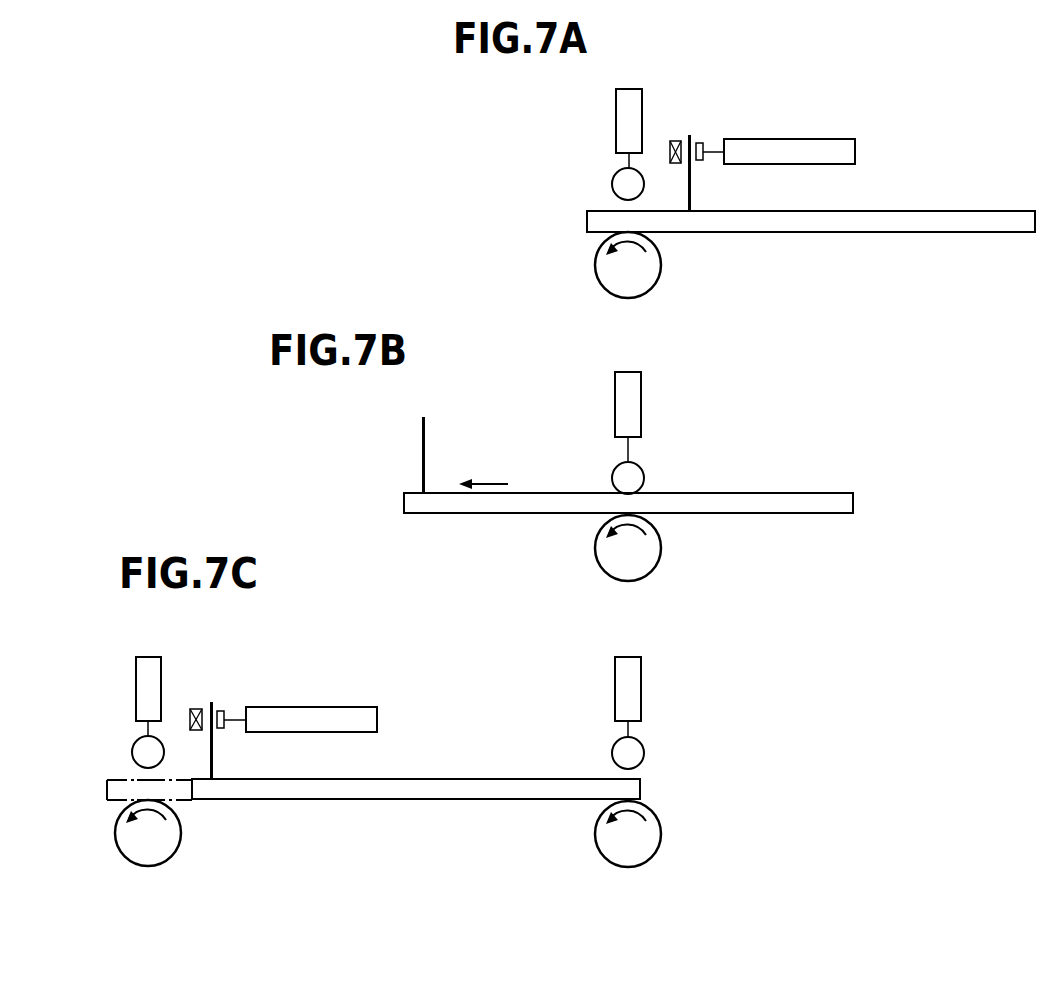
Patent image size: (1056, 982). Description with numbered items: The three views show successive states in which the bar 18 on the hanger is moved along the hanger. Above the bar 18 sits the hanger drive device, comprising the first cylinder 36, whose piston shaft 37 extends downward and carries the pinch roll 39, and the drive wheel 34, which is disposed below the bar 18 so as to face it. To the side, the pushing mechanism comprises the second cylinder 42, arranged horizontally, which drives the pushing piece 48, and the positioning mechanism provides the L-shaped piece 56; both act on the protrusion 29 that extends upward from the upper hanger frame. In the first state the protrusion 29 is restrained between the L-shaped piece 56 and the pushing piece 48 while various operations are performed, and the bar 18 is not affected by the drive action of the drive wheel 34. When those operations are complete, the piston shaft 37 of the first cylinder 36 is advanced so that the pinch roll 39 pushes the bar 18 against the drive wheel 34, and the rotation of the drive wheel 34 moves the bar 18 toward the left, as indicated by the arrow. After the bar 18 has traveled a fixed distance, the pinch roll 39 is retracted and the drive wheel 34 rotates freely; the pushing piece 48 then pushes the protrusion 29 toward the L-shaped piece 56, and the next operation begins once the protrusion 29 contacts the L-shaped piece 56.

In FIG. 7A, the bar 18 is at (857, 223).
In FIG. 7B, the bar 18 is at (778, 505).
In FIG. 7C, the bar 18 is at (370, 793).
In FIG. 7A, the protrusion 29 is at (692, 135).
In FIG. 7B, the protrusion 29 is at (427, 430).
In FIG. 7C, the protrusion 29 is at (213, 703).
In FIG. 7A, the drive wheel 34 is at (650, 278).
In FIG. 7B, the drive wheel 34 is at (648, 563).
In FIG. 7C, the drive wheel 34 is at (167, 852).
In FIG. 7A, the first cylinder 36 is at (622, 119).
In FIG. 7B, the first cylinder 36 is at (637, 402).
In FIG. 7C, the first cylinder 36 is at (138, 685).
In FIG. 7B, the piston shaft 37 is at (623, 448).
In FIG. 7A, the pinch roll 39 is at (619, 184).
In FIG. 7B, the pinch roll 39 is at (638, 475).
In FIG. 7C, the pinch roll 39 is at (138, 748).
In FIG. 7A, the second cylinder 42 is at (792, 143).
In FIG. 7C, the second cylinder 42 is at (330, 710).
In FIG. 7A, the pushing piece 48 is at (703, 143).
In FIG. 7C, the pushing piece 48 is at (225, 713).
In FIG. 7A, the L-shaped piece 56 is at (677, 141).
In FIG. 7C, the L-shaped piece 56 is at (197, 709).